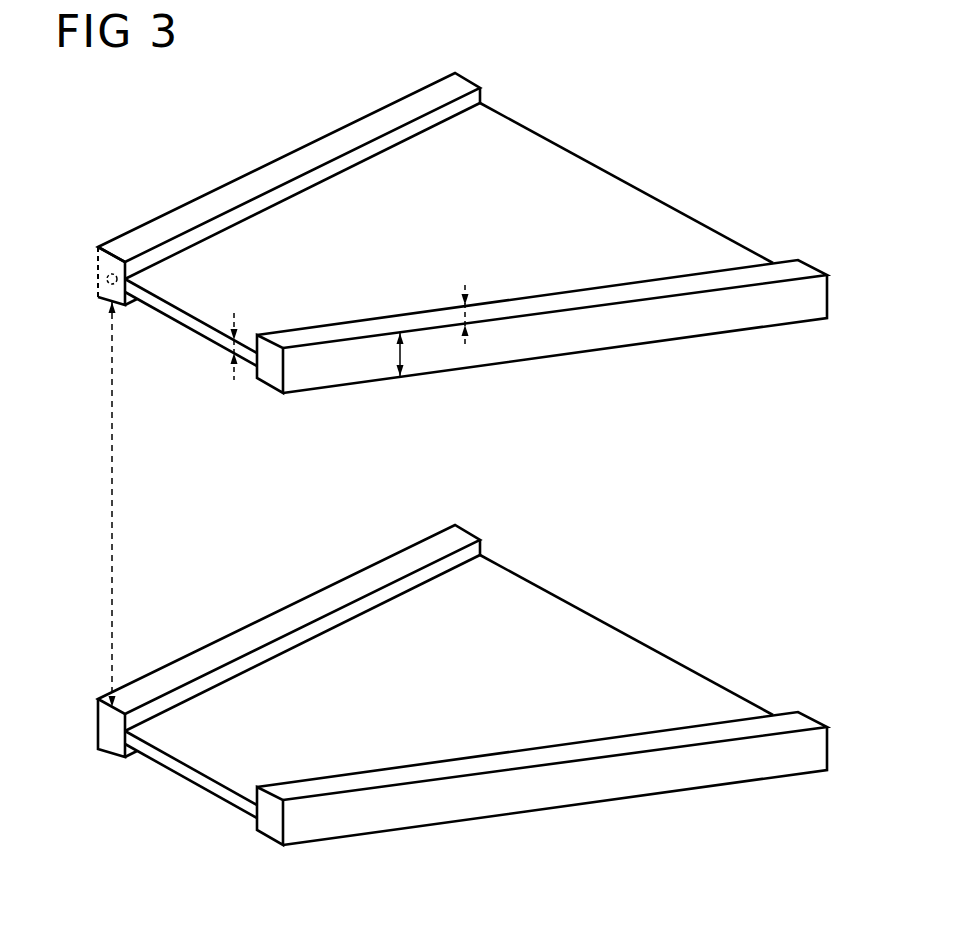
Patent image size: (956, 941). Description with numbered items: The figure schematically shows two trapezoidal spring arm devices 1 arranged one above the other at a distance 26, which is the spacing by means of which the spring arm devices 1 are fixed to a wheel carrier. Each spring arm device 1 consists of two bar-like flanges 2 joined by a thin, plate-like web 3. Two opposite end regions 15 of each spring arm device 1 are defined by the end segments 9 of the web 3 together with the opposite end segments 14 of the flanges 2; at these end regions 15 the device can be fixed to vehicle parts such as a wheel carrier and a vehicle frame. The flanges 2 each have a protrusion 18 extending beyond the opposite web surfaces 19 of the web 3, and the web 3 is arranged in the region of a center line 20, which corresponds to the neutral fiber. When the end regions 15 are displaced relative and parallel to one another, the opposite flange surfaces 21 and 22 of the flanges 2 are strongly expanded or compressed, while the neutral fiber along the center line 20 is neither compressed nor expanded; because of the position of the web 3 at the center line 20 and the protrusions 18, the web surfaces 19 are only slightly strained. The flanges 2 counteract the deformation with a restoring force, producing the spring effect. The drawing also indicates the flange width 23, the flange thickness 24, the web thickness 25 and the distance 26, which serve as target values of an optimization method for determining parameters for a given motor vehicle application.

The spring arm device 1 is at (663, 92).
The flange 2 is at (710, 317).
The web 3 is at (635, 656).
The end segment of the web 9 is at (449, 234).
The end segment of the flange 14 is at (451, 94).
The end region 15 is at (628, 212).
The protrusion 18 is at (222, 227).
The web surface 19 is at (509, 589).
The center line 20 is at (106, 281).
The flange surface 21 is at (295, 620).
The flange surface 22 is at (343, 838).
The flange width 23 is at (465, 314).
The flange thickness 24 is at (400, 360).
The web thickness 25 is at (234, 345).
The distance 26 is at (112, 445).